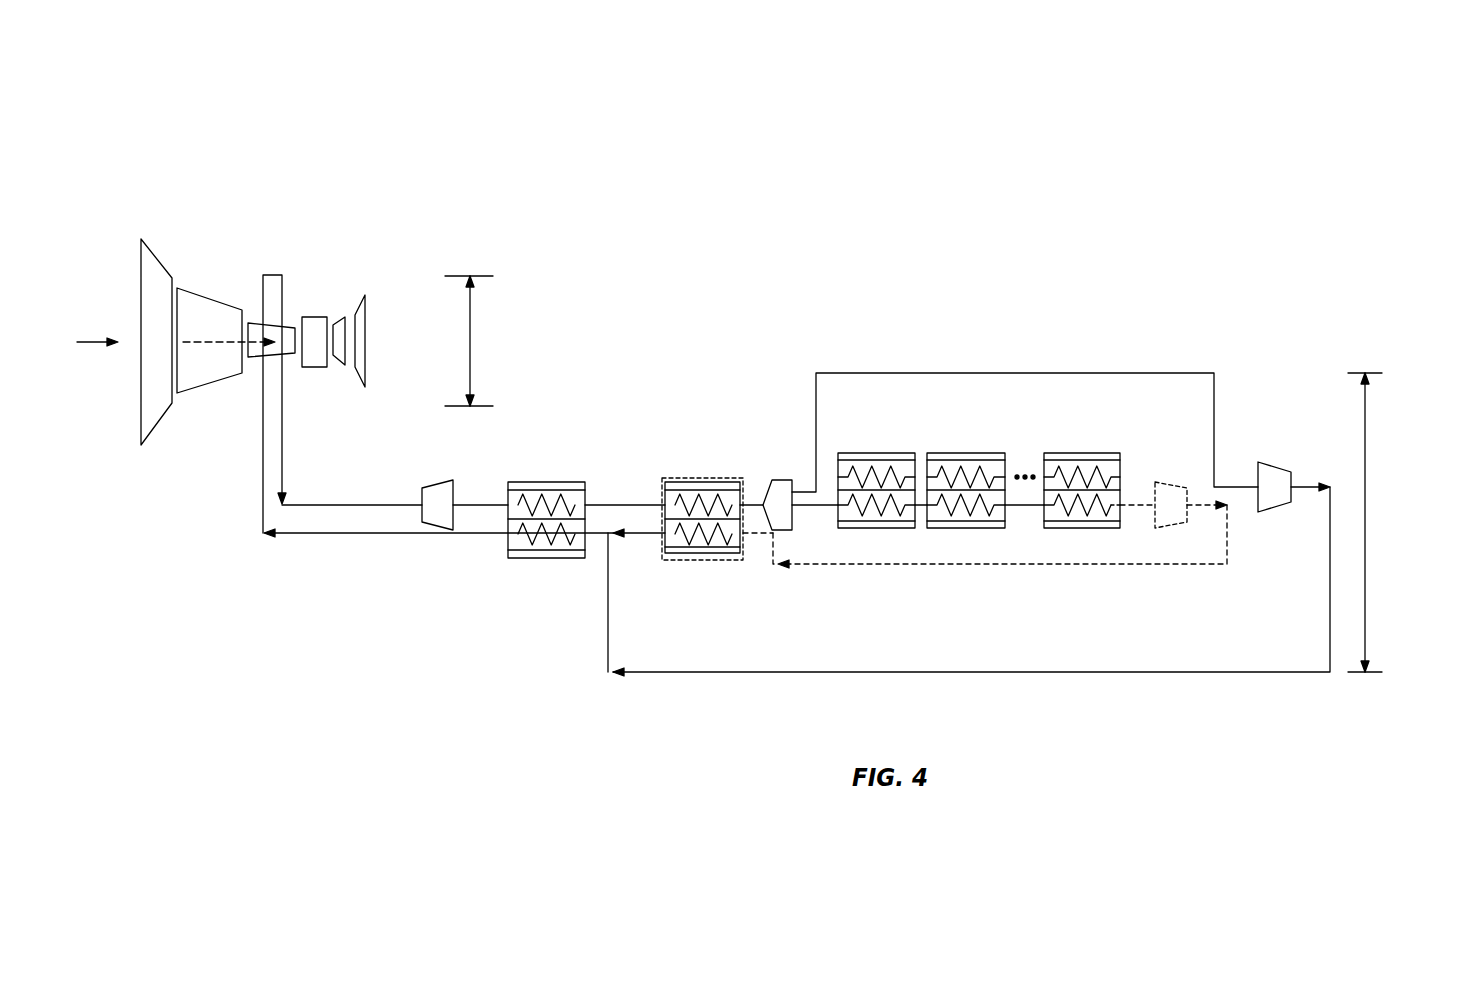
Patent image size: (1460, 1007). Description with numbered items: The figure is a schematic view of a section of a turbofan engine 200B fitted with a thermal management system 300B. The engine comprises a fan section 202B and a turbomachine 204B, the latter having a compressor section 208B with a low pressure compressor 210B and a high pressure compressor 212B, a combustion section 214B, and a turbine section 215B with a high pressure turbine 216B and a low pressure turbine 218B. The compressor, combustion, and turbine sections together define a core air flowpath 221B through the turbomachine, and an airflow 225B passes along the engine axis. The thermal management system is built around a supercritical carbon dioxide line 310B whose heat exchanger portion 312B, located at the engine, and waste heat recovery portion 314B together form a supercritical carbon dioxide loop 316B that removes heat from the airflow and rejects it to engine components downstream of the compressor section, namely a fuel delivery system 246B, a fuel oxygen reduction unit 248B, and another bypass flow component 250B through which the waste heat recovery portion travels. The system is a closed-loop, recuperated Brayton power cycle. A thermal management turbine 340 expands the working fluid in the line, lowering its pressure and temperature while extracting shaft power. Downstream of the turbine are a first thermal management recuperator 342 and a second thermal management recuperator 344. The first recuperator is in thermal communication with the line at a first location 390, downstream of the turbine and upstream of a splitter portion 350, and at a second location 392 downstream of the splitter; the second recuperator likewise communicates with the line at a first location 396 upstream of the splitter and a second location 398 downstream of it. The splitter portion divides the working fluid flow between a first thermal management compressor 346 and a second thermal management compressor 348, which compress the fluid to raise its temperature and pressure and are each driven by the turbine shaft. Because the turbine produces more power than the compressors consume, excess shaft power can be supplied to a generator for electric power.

The turbofan engine 200B is at (430, 148).
The turbomachine 204B is at (287, 187).
The turbine section 215B is at (372, 272).
The compressor section 208B is at (233, 277).
The thermal management system 300B is at (1143, 333).
The supercritical carbon dioxide loop 316B is at (230, 567).
The fan section 202B is at (140, 280).
The low pressure compressor 210B is at (207, 388).
The airflow 225B is at (212, 338).
The high pressure compressor 212B is at (253, 360).
The combustion section 214B is at (320, 367).
The high pressure turbine 216B is at (343, 326).
The low pressure turbine 218B is at (367, 347).
The core air flowpath 221B is at (90, 344).
The heat exchanger portion 312B is at (472, 335).
The supercritical carbon dioxide line 310B is at (278, 273).
The thermal management turbine 340 is at (438, 485).
The first thermal management recuperator 342 is at (569, 524).
The first location 390 is at (563, 500).
The second location 392 is at (527, 540).
The second thermal management recuperator 344 is at (702, 507).
The first location 396 is at (725, 498).
The second location 398 is at (718, 540).
The splitter portion 350 is at (783, 478).
The fuel delivery system 246B is at (870, 452).
The fuel oxygen reduction unit 248B is at (967, 452).
The bypass flow component 250B is at (1077, 452).
The first thermal management compressor 346 is at (1273, 463).
The second thermal management compressor 348 is at (1173, 525).
The waste heat recovery portion 314B is at (1367, 550).